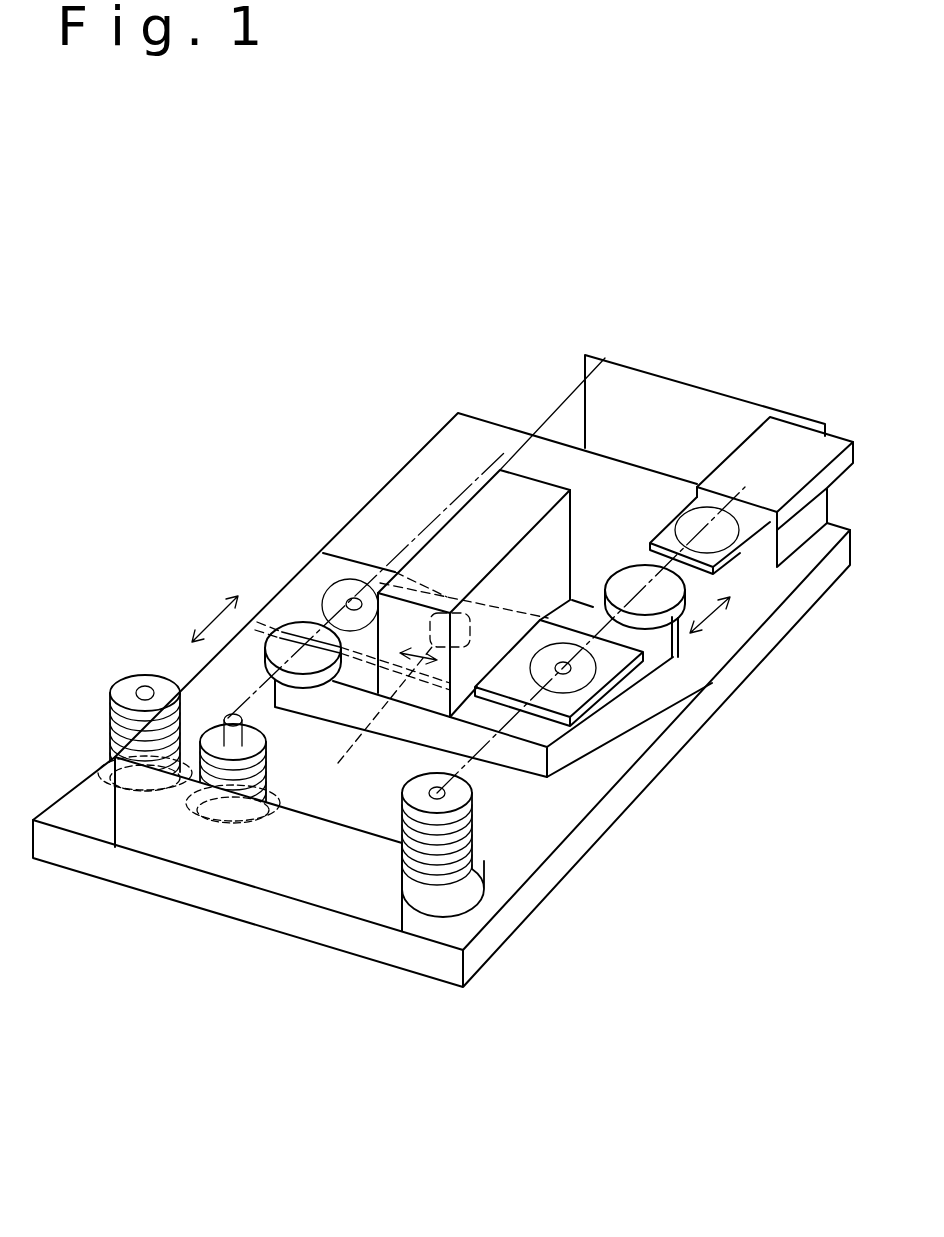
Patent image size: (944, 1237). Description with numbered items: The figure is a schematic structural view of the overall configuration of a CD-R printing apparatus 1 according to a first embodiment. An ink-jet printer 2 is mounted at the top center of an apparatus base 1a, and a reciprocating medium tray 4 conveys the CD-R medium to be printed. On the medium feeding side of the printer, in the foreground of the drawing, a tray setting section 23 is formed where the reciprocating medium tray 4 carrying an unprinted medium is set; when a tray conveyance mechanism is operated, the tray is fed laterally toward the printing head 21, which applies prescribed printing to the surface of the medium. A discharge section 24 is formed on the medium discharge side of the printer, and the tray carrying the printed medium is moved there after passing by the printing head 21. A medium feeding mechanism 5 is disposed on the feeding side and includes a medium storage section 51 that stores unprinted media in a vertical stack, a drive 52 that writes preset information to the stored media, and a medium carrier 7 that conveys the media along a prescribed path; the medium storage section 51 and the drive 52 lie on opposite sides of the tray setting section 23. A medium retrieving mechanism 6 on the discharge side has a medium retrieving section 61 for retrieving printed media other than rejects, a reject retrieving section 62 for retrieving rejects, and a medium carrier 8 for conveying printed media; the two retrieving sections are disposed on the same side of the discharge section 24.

The printing apparatus 1 is at (437, 352).
The apparatus base 1a is at (270, 920).
The ink-jet printer 2 is at (562, 480).
The printing head 21 is at (401, 684).
The tray setting section 23 is at (503, 705).
The discharge section 24 is at (357, 677).
The reciprocating medium tray 4 is at (561, 633).
The medium feeding mechanism 5 is at (830, 681).
The medium storage section 51 is at (493, 853).
The drive 52 is at (787, 567).
The medium retrieving mechanism 6 is at (267, 452).
The medium retrieving section 61 is at (203, 707).
The reject retrieving section 62 is at (134, 681).
The medium carrier 7 is at (677, 617).
The medium carrier 8 is at (300, 625).